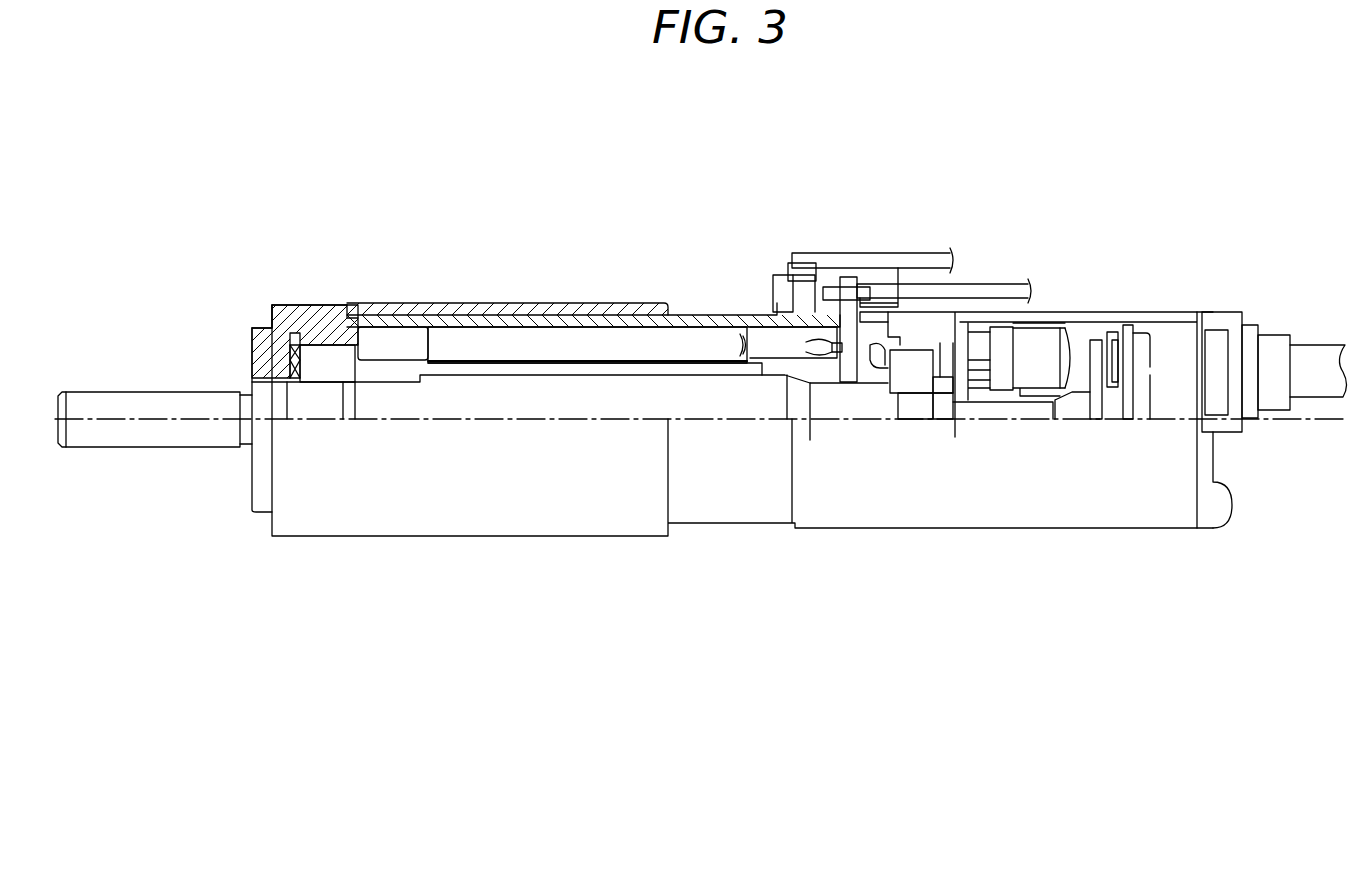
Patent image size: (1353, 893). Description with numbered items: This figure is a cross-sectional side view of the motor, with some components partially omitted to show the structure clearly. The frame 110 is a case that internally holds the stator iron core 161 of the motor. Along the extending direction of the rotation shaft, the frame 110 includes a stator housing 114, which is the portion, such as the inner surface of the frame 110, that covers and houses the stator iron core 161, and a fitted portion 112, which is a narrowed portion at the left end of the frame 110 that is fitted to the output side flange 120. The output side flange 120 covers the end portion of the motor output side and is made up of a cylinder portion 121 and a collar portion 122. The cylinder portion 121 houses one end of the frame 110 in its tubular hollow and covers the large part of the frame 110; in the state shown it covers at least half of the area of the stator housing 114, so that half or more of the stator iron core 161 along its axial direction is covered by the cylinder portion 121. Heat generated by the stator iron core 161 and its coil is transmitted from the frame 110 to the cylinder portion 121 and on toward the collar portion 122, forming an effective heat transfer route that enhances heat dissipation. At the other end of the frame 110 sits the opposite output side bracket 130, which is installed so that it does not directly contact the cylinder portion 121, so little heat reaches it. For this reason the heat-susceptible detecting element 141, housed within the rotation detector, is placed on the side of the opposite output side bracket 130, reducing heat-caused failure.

The frame 110 is at (712, 315).
The fitted portion 112 is at (330, 337).
The stator housing 114 is at (650, 305).
The output side flange 120 is at (268, 354).
The cylinder portion 121 is at (672, 232).
The collar portion 122 is at (342, 278).
The opposite output side bracket 130 is at (880, 262).
The detecting element 141 is at (1110, 340).
The stator iron core 161 is at (537, 345).